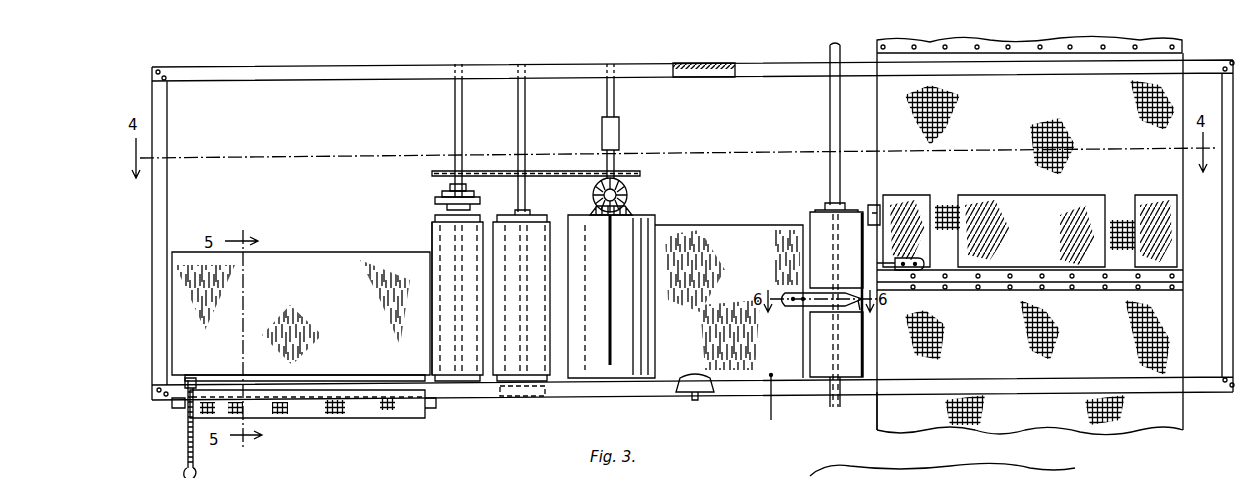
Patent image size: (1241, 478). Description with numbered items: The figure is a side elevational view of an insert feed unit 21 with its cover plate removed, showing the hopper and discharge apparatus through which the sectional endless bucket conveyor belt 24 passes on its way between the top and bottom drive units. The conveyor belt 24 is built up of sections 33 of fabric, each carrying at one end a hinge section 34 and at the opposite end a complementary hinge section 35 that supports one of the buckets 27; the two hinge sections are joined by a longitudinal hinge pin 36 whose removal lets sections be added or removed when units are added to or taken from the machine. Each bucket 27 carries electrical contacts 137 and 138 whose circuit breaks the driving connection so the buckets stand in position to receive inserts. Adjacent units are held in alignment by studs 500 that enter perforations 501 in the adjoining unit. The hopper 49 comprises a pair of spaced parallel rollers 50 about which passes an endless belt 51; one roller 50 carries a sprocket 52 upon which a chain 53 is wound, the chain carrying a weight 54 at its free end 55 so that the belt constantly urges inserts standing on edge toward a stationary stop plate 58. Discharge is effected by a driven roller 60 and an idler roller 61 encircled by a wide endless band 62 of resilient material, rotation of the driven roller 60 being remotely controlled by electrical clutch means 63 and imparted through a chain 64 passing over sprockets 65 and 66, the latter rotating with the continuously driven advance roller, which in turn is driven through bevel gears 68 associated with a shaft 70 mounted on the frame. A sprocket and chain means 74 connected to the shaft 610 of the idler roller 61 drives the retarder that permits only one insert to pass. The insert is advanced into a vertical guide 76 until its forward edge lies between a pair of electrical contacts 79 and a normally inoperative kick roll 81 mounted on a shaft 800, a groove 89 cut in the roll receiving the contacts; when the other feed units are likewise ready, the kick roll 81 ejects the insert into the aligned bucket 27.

The insert feed unit 21 is at (795, 100).
The sectional endless bucket conveyor belt 24 is at (1183, 410).
The bucket 27 is at (1163, 220).
The section 33 is at (1175, 178).
The hinge section 34 is at (1178, 46).
The complementary hinge section 35 is at (1180, 275).
The longitudinal hinge pin 36 is at (1183, 283).
The hopper 49 is at (312, 297).
The roller 50 is at (414, 410).
The endless belt 51 is at (362, 408).
The sprocket 52 is at (185, 382).
The chain 53 is at (188, 428).
The weight 54 is at (198, 474).
The free end 55 is at (190, 455).
The stationary stop plate 58 is at (350, 290).
The driven roller 60 is at (432, 230).
The idler roller 61 is at (545, 215).
The wide endless band 62 is at (432, 244).
The electrical clutch means 63 is at (440, 199).
The chain 64 is at (556, 171).
The sprocket 65 is at (445, 172).
The sprocket 66 is at (640, 173).
The bevel gears 68 is at (630, 210).
The shaft 70 is at (630, 192).
The sprocket and chain means 74 is at (535, 396).
The vertical guide 76 is at (736, 240).
The electrical contacts 79 is at (798, 293).
The kick roll 81 is at (822, 238).
The groove 89 is at (860, 312).
The electrical contact 137 is at (885, 268).
The electrical contact 138 is at (872, 214).
The stud 500 is at (702, 394).
The perforation 501 is at (702, 63).
The shaft 610 is at (523, 118).
The shaft 800 is at (971, 469).